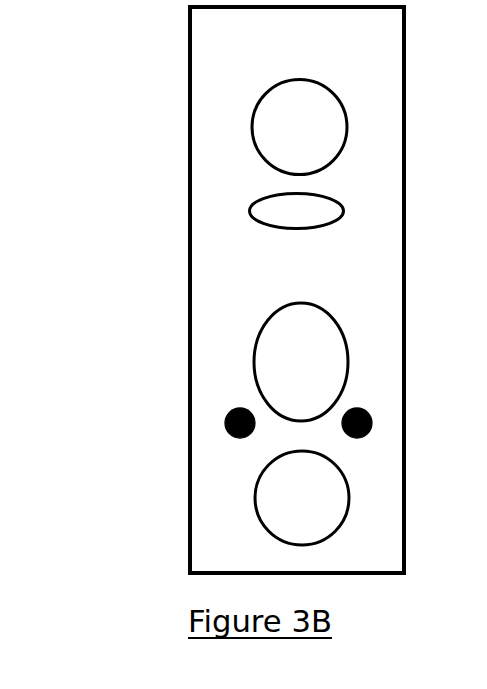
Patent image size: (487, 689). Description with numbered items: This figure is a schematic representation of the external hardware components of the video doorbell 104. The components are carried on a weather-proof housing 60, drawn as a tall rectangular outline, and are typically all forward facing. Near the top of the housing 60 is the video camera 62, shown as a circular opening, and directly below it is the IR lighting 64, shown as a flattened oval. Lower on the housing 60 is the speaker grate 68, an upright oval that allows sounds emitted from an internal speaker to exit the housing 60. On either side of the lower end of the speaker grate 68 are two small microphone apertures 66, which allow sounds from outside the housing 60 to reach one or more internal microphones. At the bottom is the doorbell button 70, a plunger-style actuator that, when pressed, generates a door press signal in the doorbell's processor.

The video doorbell 104 is at (110, 115).
The weather-proof housing 60 is at (190, 277).
The video camera 62 is at (320, 145).
The IR lighting 64 is at (300, 230).
The microphone apertures 66 is at (371, 423).
The speaker grate 68 is at (314, 372).
The doorbell button 70 is at (311, 508).